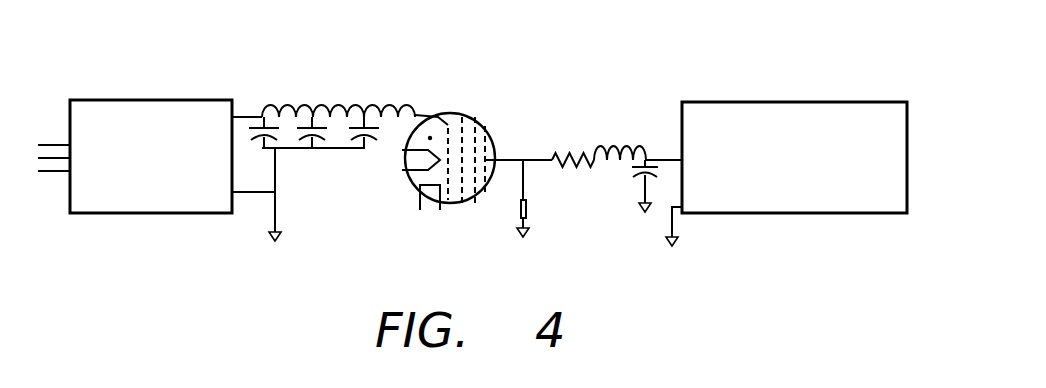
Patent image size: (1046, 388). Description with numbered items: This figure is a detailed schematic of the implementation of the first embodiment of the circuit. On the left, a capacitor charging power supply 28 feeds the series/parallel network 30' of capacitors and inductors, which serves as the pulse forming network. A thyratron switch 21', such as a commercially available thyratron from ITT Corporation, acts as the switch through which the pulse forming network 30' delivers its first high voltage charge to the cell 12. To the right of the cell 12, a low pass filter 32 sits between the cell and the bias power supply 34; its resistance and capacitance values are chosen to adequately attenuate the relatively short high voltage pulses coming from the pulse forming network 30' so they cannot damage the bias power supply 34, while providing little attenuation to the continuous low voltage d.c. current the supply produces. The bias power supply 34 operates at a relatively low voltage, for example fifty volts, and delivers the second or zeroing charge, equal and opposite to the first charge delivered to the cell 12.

The capacitor charging power supply 28 is at (160, 214).
The series/parallel network of capacitors and inductors 30' is at (316, 137).
The thyratron switch 21' is at (432, 191).
The cell 12 is at (518, 219).
The low pass filter 32 is at (657, 222).
The bias power supply 34 is at (808, 215).